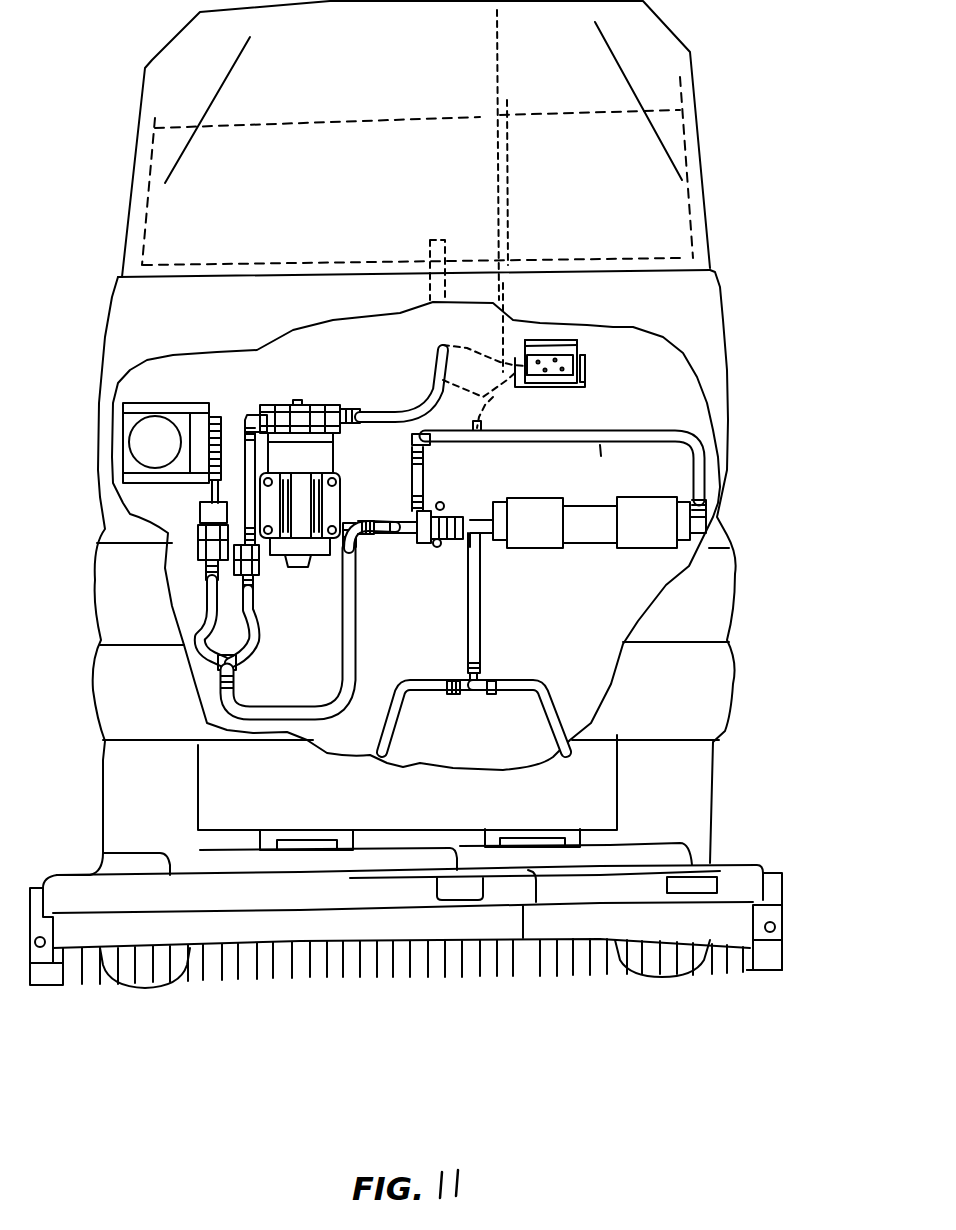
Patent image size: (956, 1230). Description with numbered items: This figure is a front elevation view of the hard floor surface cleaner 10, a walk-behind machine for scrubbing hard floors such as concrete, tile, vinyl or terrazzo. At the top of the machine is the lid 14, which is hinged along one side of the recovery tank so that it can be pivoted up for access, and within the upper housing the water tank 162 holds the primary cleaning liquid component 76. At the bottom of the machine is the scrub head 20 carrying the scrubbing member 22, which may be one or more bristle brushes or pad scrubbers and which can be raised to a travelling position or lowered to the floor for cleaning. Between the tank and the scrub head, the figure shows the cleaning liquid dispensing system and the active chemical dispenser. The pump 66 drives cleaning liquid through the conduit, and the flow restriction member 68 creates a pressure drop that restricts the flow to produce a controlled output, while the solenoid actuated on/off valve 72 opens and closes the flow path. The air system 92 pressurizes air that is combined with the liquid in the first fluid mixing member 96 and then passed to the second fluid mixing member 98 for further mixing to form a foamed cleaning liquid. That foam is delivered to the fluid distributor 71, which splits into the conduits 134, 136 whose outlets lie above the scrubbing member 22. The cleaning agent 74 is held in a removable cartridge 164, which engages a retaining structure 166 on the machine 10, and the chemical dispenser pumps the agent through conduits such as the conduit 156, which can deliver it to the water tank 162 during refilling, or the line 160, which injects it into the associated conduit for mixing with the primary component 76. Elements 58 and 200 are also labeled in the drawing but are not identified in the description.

The hard floor surface cleaner 10 is at (826, 53).
The lid 14 is at (695, 62).
The scrub head 20 is at (752, 863).
The scrubbing member 22 is at (752, 972).
The conduit 58 is at (484, 355).
The pump 66 is at (326, 457).
The flow restriction member 68 is at (262, 574).
The fluid distributor 71 is at (513, 650).
The solenoid actuated on/off valve 72 is at (442, 506).
The cleaning agent 74 is at (574, 357).
The primary cleaning liquid component 76 is at (657, 370).
The air system 92 is at (200, 385).
The first fluid mixing member 96 is at (242, 660).
The second fluid mixing member 98 is at (577, 572).
The conduit 134 is at (405, 680).
The conduit 136 is at (530, 678).
The conduit 156 is at (512, 292).
The line 160 is at (492, 414).
The water tank 162 is at (724, 161).
The removable cartridge 164 is at (578, 333).
The retaining structure 166 is at (588, 375).
The pump assembly 200 is at (329, 387).